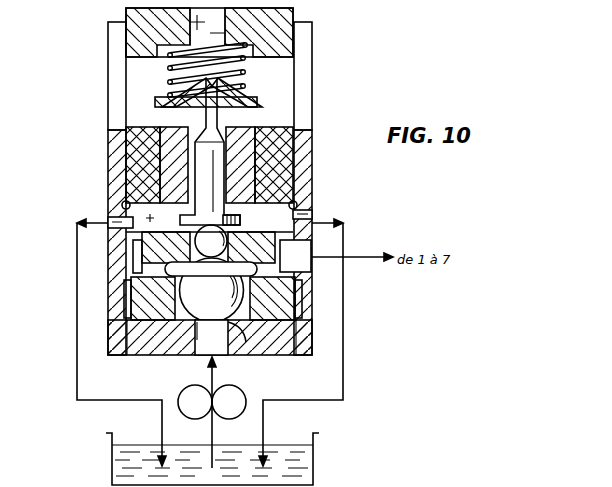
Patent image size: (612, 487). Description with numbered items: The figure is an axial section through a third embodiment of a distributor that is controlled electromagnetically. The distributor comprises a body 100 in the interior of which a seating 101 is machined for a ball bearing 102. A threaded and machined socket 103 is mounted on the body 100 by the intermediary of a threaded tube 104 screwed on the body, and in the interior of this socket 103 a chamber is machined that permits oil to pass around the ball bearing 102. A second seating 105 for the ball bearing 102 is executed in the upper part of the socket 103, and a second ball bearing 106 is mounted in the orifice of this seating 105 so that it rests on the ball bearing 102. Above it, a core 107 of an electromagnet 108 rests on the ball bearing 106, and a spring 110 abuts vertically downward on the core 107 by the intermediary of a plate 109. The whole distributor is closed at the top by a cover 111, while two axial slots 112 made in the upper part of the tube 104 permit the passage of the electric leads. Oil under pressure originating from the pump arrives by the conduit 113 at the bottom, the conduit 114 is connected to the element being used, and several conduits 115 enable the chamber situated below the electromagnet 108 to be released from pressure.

The body 100 is at (277, 350).
The seating 101 is at (224, 348).
The ball bearing 102 is at (212, 290).
The threaded and machined socket 103 is at (300, 290).
The threaded tube 104 is at (305, 342).
The second seating 105 is at (243, 230).
The second ball bearing 106 is at (211, 252).
The core 107 is at (210, 151).
The electromagnet 108 is at (247, 127).
The plate 109 is at (163, 96).
The spring 110 is at (247, 77).
The cover 111 is at (296, 16).
The axial slots 112 is at (304, 77).
The conduit 113 is at (207, 353).
The conduit 114 is at (307, 268).
The conduits 115 is at (311, 217).